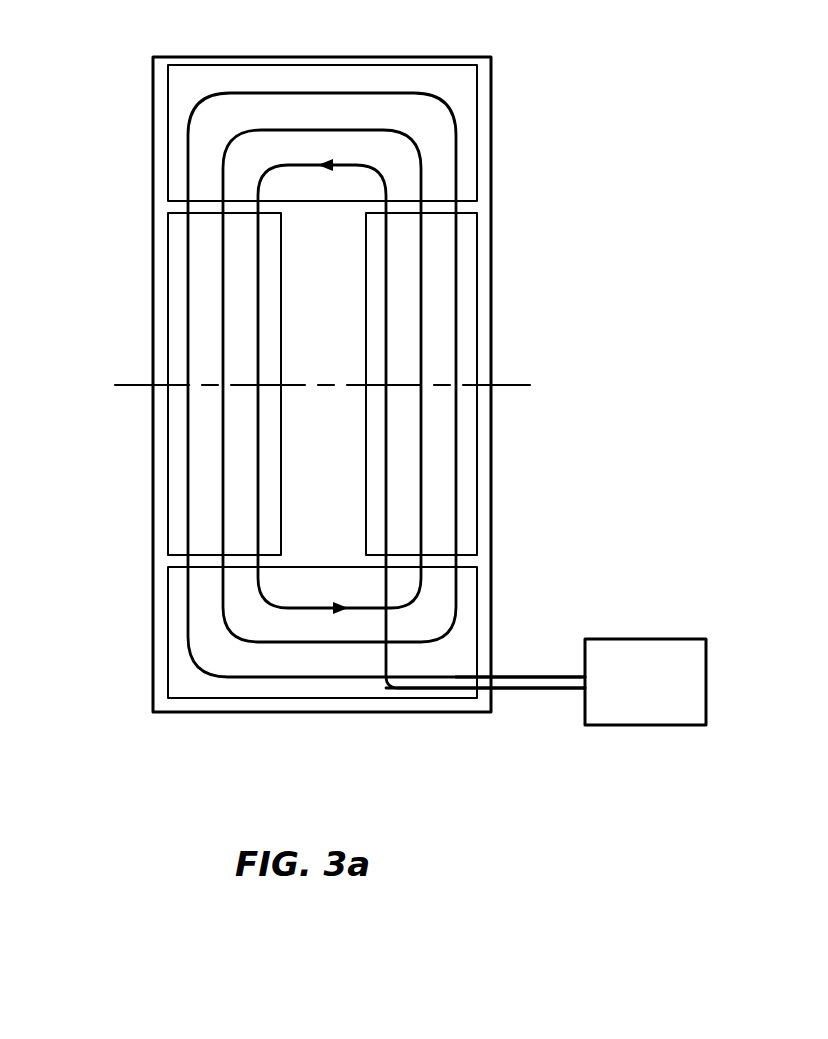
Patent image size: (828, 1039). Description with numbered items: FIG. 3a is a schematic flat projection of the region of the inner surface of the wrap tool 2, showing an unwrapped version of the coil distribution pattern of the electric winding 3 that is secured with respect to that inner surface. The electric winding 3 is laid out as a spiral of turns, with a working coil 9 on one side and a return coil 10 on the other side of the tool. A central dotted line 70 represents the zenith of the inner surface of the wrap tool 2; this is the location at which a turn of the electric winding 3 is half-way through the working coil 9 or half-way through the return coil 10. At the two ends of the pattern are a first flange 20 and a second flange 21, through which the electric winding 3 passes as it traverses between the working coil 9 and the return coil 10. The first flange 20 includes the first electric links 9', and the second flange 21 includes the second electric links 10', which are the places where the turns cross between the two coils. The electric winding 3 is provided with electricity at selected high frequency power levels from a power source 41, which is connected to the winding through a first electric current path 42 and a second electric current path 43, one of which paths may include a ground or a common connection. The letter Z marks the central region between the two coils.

The wrap tool 2 is at (491, 188).
The electric winding 3 is at (326, 90).
The working coil 9 is at (460, 384).
The first electric links 9' is at (474, 129).
The return coil 10 is at (180, 384).
The second electric links 10' is at (315, 686).
The first flange 20 is at (168, 132).
The second flange 21 is at (168, 660).
The power source 41 is at (660, 639).
The first electric current path 42 is at (540, 672).
The second electric current path 43 is at (544, 690).
The central dotted line 70 is at (125, 386).
The zone Z is at (334, 292).